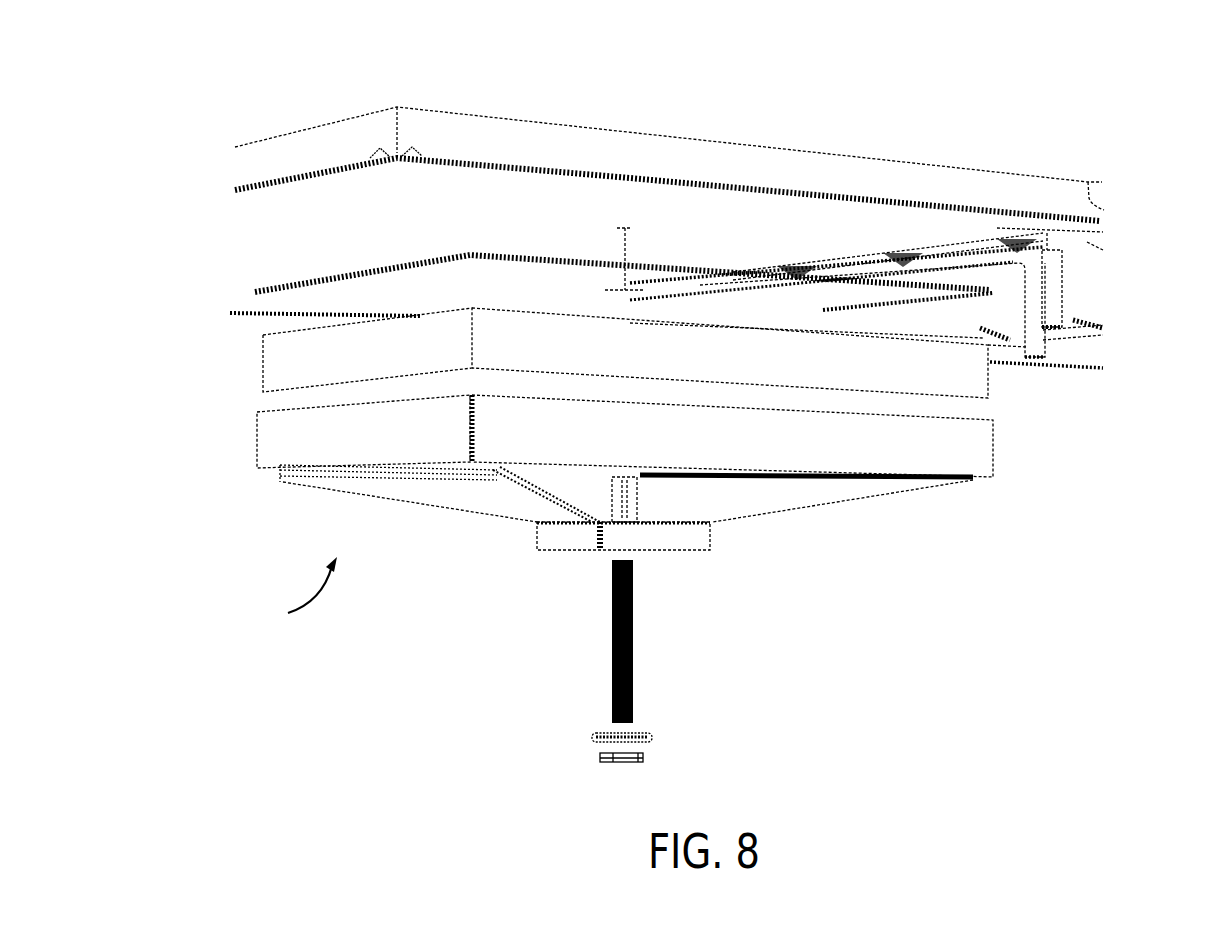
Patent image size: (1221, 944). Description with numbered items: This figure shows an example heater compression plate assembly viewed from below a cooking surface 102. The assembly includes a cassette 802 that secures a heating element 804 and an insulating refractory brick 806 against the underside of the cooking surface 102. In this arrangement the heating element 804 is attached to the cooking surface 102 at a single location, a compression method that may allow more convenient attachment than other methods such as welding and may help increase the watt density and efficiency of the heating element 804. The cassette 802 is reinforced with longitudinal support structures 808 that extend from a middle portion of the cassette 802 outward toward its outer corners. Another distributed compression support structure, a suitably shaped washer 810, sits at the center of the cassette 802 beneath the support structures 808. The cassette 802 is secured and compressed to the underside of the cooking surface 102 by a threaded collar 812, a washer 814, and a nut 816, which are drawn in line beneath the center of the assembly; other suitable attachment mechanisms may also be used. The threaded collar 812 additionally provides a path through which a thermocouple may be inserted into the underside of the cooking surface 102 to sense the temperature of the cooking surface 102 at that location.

The cooking surface 102 is at (295, 153).
The cassette 802 is at (312, 446).
The heating element 804 is at (355, 272).
The insulating refractory brick 806 is at (295, 357).
The longitudinal support structures 808 is at (697, 503).
The washer 810 is at (662, 553).
The threaded collar 812 is at (610, 637).
The washer 814 is at (572, 733).
The nut 816 is at (580, 759).